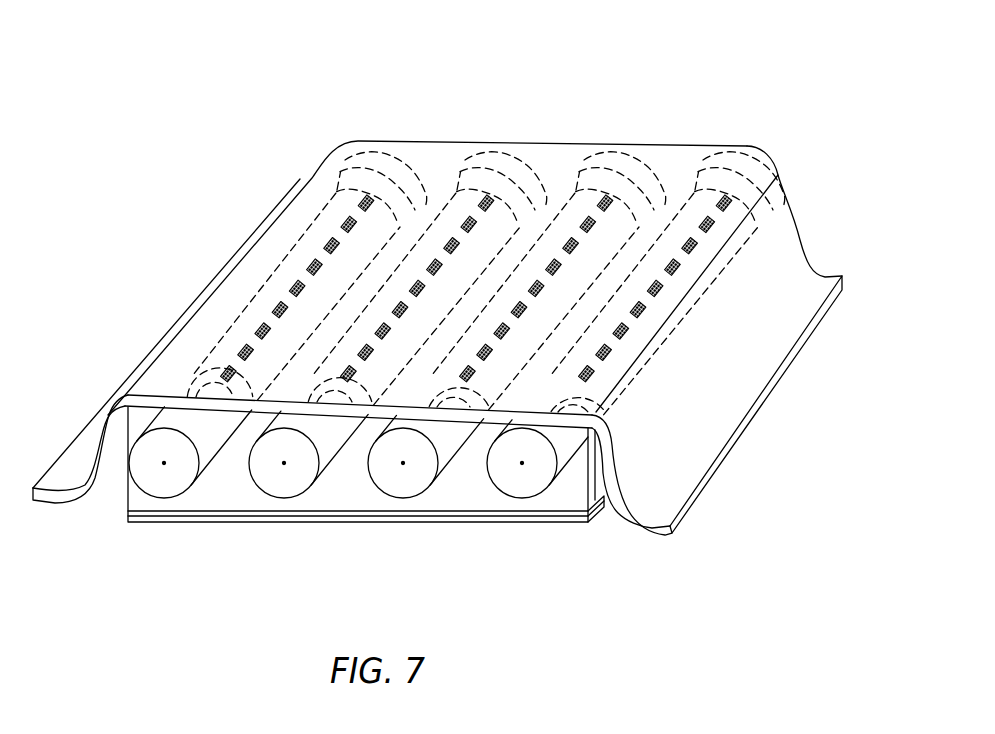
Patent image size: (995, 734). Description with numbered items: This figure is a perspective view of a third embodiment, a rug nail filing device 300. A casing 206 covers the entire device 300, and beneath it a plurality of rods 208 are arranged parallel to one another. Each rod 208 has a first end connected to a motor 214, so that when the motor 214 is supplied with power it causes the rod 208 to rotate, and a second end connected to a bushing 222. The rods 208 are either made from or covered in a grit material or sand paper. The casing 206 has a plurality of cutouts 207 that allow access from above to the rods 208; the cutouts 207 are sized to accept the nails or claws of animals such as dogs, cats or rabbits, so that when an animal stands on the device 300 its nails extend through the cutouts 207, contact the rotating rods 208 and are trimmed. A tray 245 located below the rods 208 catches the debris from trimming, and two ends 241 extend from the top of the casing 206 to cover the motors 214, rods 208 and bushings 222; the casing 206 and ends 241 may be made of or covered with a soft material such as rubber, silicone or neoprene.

The rug nail filing device 300 is at (609, 73).
The casing 206 is at (443, 190).
The cutouts 207 is at (262, 327).
The rods 208 is at (298, 267).
The motor 214 is at (182, 497).
The bushing 222 is at (385, 167).
The two ends 241 is at (638, 527).
The tray 245 is at (535, 525).